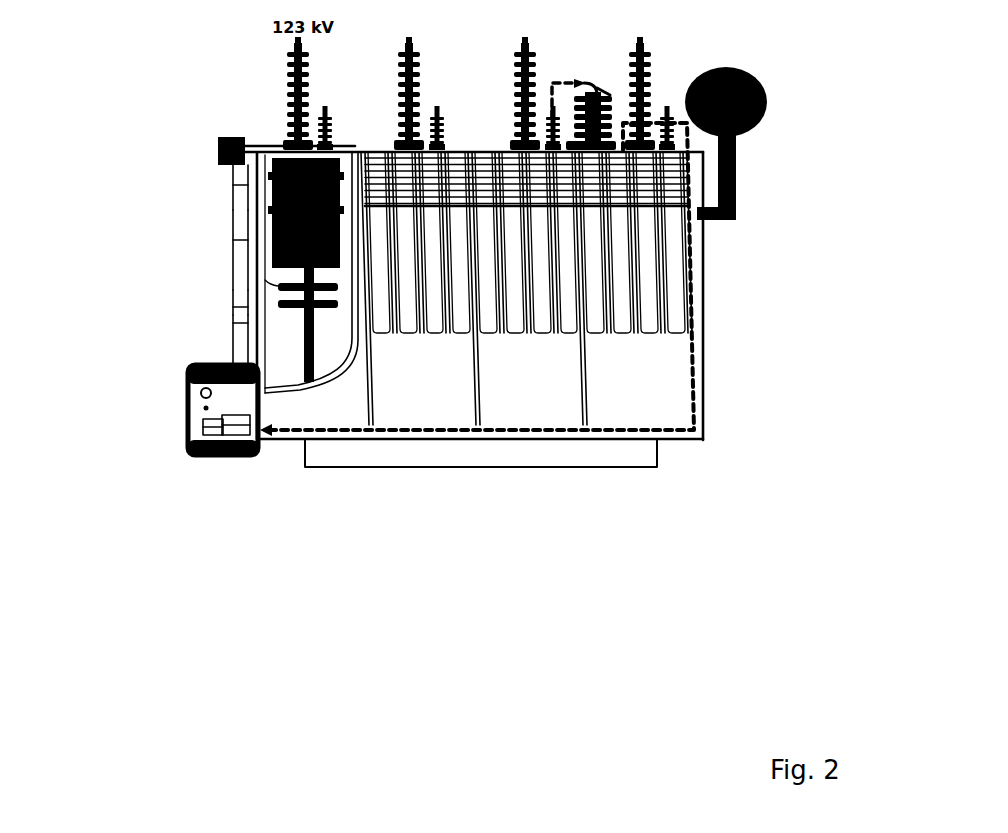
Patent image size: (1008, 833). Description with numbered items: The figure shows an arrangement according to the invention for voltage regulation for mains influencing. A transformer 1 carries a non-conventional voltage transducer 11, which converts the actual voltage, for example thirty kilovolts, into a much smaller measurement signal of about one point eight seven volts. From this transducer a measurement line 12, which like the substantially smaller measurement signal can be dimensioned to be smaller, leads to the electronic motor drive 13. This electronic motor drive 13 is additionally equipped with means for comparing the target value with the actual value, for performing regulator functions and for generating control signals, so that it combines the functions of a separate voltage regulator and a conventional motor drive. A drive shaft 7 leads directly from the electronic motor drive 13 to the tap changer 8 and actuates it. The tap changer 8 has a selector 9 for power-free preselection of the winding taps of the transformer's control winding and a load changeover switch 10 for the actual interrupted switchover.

The transformer 1 is at (575, 230).
The drive shaft 7 is at (235, 323).
The tap changer 8 is at (233, 185).
The selector 9 is at (235, 308).
The load changeover switch 10 is at (235, 240).
The non-conventional voltage transducer 11 is at (617, 93).
The measurement line 12 is at (704, 297).
The electronic motor drive 13 is at (183, 408).